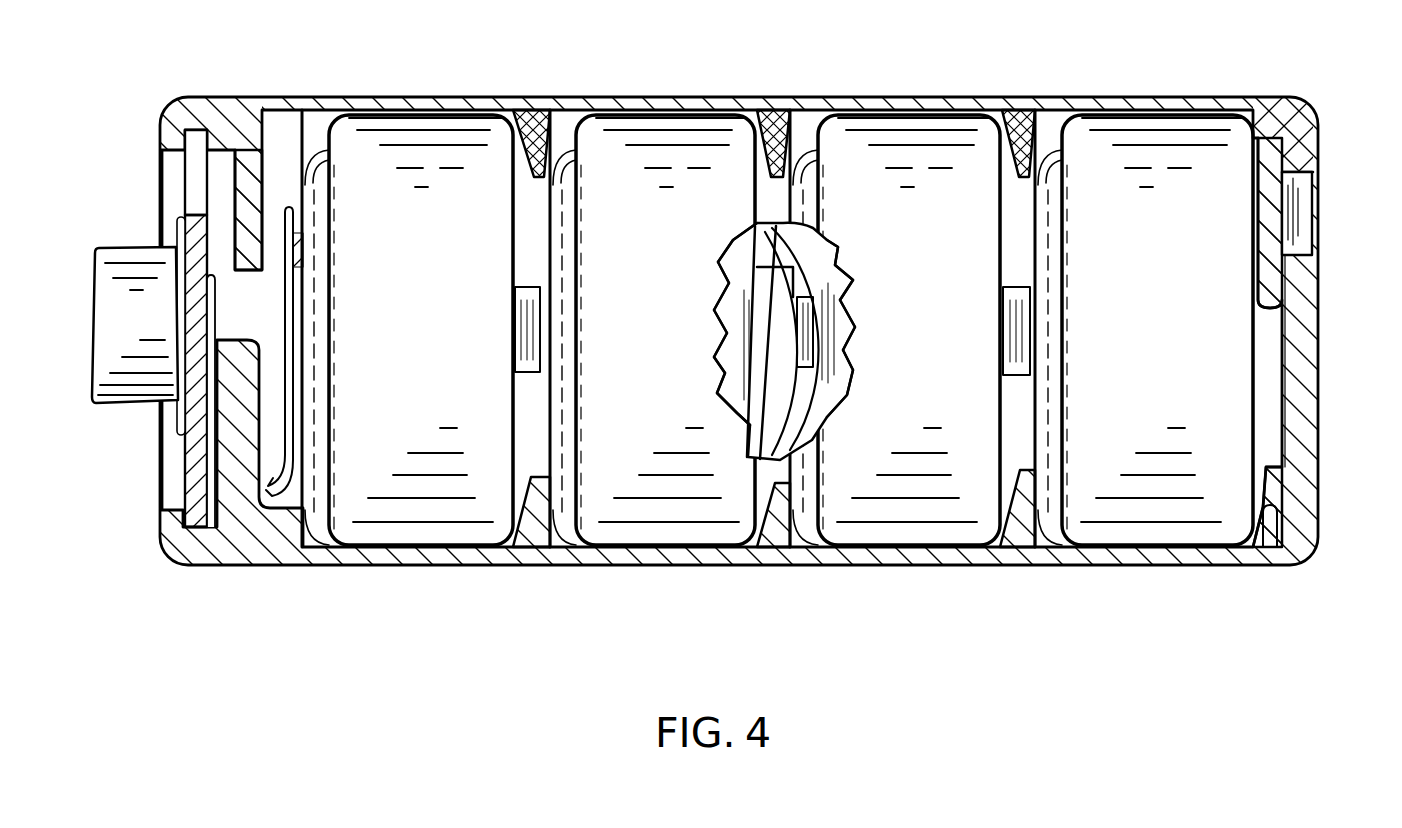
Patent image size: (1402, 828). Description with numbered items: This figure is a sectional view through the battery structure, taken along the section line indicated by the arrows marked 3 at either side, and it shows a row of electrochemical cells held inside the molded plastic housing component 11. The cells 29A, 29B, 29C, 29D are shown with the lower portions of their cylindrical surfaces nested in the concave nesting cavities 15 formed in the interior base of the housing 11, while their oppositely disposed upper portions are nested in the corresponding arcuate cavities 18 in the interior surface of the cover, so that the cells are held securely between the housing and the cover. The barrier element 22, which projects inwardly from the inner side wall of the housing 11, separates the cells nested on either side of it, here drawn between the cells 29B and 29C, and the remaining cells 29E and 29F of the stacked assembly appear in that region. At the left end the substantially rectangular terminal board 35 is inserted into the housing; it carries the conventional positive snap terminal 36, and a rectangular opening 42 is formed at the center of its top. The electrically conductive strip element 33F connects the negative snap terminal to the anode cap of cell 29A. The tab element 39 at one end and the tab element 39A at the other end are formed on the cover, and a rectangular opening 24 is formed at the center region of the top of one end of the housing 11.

The housing component 11 is at (887, 556).
The nesting cavities 15 is at (523, 548).
The arcuate cavities 18 is at (520, 152).
The barrier element 22 is at (770, 325).
The rectangular opening 24 is at (1296, 237).
The cell 29A is at (396, 341).
The cell 29B is at (669, 341).
The cell 29C is at (888, 341).
The cell 29D is at (1122, 341).
The cell 29E is at (834, 278).
The cell 29F is at (728, 283).
The electrically conductive strip element 33F is at (265, 487).
The terminal board 35 is at (194, 484).
The positive snap terminal 36 is at (107, 318).
The tab element 39 is at (250, 184).
The tab element 39A is at (1267, 208).
The rectangular opening 42 is at (196, 168).
The section line 3- 3 is at (80, 185).